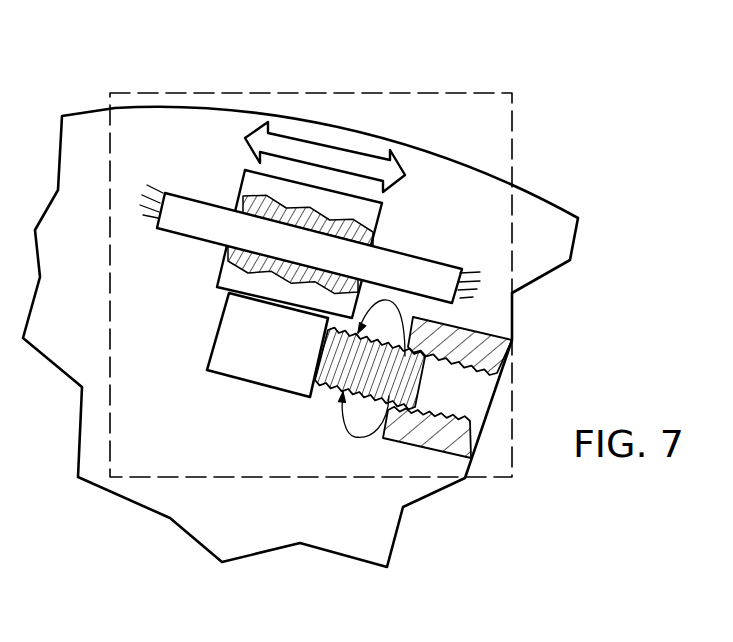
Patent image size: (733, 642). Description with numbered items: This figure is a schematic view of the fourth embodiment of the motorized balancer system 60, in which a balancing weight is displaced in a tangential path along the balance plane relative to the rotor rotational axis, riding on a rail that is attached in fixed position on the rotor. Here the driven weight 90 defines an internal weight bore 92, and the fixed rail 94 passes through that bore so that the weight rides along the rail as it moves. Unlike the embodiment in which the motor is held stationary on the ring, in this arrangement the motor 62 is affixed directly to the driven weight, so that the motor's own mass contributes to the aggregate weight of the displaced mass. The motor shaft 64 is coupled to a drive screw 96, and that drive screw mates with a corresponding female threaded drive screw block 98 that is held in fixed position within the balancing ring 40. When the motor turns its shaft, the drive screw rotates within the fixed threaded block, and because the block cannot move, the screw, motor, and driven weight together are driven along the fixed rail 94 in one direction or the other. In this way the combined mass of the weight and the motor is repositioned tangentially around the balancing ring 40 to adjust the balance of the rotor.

The balancing ring 40 is at (487, 122).
The motorized balancer system 60 is at (175, 75).
The motor 62 is at (233, 358).
The motor shaft 64 is at (330, 362).
The driven weight 90 is at (362, 212).
The internal weight bore 92 is at (345, 245).
The fixed rail 94 is at (425, 273).
The drive screw 96 is at (372, 372).
The female threaded drive screw block 98 is at (425, 360).